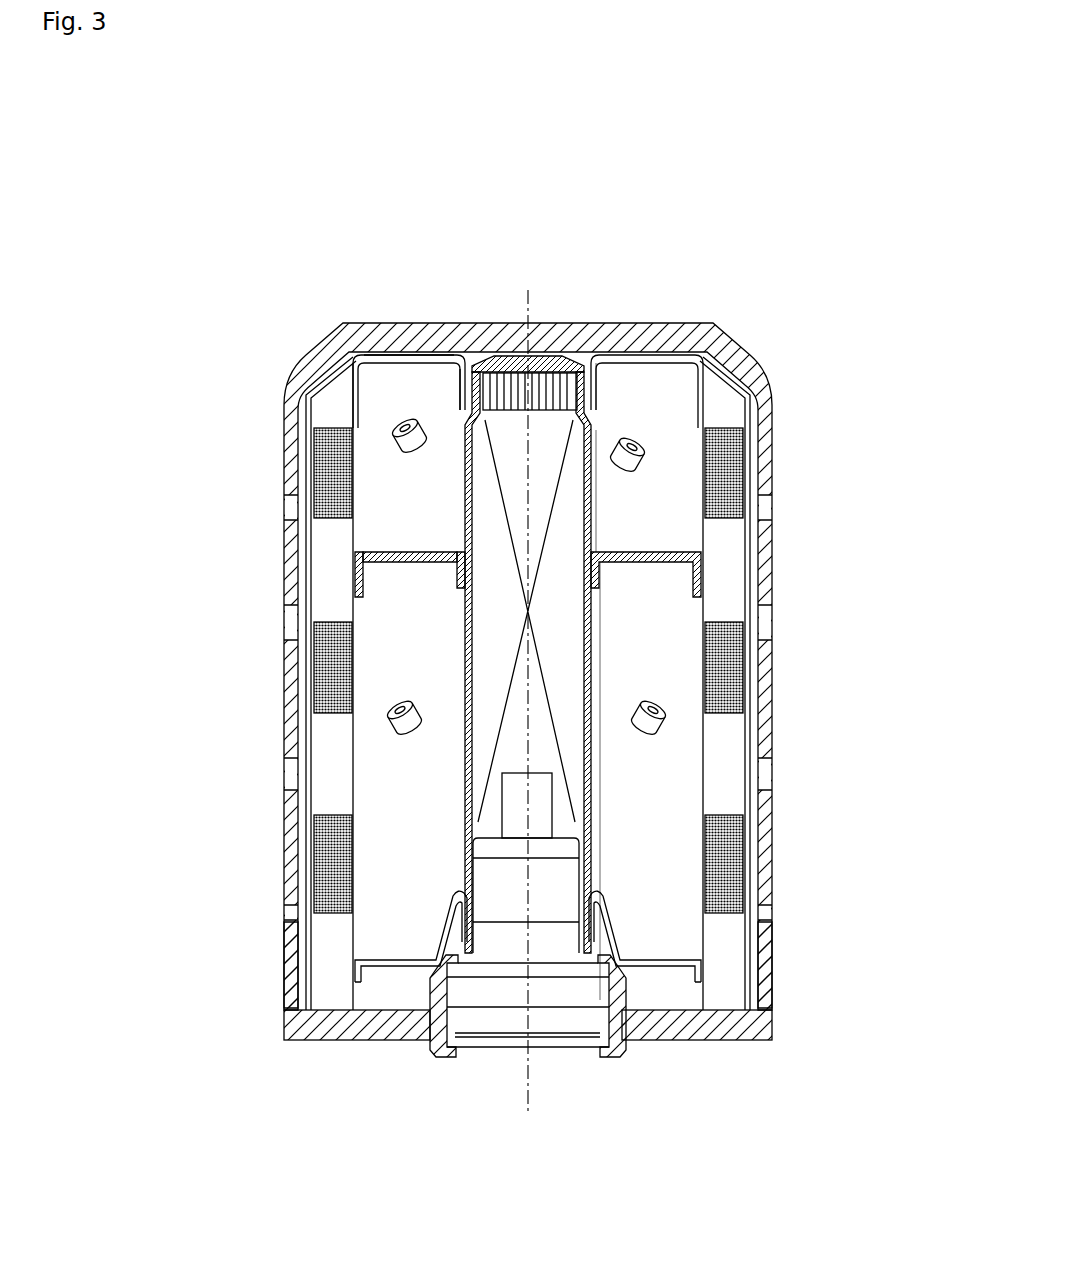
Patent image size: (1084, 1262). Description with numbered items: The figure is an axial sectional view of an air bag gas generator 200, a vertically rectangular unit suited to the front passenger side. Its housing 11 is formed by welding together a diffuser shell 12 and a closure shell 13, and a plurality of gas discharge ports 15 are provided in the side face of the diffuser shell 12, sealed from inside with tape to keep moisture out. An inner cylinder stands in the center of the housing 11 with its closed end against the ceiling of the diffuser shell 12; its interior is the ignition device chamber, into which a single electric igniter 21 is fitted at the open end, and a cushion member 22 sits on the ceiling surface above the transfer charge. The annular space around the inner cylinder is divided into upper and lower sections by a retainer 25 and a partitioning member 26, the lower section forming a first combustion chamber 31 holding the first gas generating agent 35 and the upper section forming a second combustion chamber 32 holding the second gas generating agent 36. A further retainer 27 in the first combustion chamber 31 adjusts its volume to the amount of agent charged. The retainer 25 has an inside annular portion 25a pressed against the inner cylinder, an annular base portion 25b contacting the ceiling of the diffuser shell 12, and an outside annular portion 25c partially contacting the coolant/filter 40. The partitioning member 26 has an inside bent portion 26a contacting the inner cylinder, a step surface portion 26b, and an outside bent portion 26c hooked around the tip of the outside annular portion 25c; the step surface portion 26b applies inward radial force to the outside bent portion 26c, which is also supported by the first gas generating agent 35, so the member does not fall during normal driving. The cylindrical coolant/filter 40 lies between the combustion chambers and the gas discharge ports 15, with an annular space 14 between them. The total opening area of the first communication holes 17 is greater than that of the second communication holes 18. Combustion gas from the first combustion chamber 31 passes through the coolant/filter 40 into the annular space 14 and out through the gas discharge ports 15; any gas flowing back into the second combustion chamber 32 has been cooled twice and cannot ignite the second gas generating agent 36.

The air bag gas generator 200 is at (568, 272).
The housing 11 is at (903, 945).
The diffuser shell 12 is at (773, 960).
The closure shell 13 is at (738, 1040).
The annular space 14 is at (300, 985).
The gas discharge ports 15 is at (767, 502).
The first communication holes 17 is at (590, 628).
The second communication holes 18 is at (590, 492).
The electric igniter 21 is at (505, 907).
The cushion member 22 is at (550, 382).
The retainer 25 is at (634, 365).
The inside annular portion 25a is at (457, 383).
The annular base portion 25b is at (410, 374).
The outside annular portion 25c is at (377, 387).
The partitioning member 26 is at (640, 565).
The inside bent portion 26a is at (459, 585).
The step surface portion 26b is at (402, 567).
The outside bent portion 26c is at (366, 582).
The retainer 27 is at (393, 965).
The first combustion chamber 31 is at (672, 873).
The second combustion chamber 32 is at (702, 485).
The first gas generating agent 35 is at (400, 735).
The second gas generating agent 36 is at (406, 456).
The coolant/filter 40 is at (725, 748).